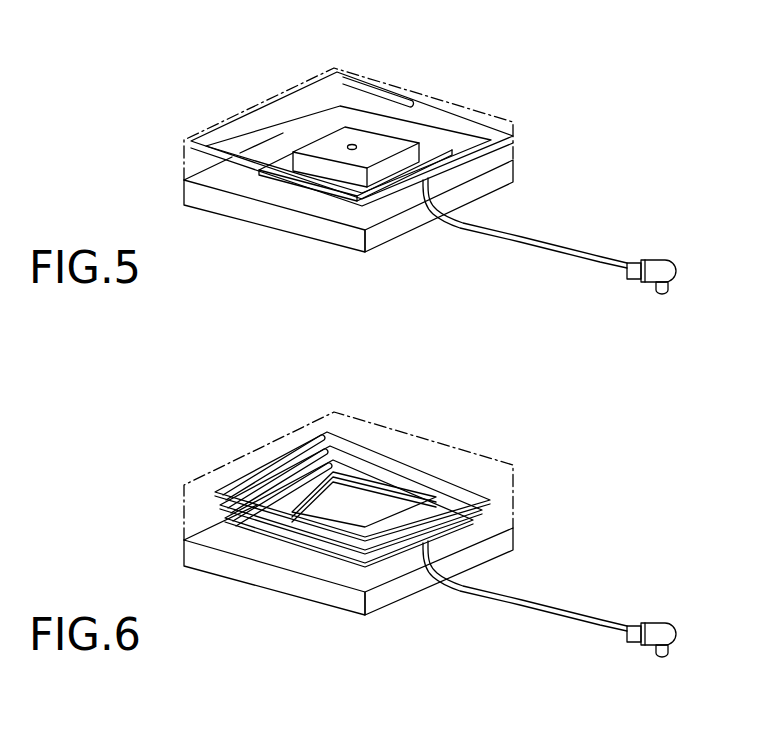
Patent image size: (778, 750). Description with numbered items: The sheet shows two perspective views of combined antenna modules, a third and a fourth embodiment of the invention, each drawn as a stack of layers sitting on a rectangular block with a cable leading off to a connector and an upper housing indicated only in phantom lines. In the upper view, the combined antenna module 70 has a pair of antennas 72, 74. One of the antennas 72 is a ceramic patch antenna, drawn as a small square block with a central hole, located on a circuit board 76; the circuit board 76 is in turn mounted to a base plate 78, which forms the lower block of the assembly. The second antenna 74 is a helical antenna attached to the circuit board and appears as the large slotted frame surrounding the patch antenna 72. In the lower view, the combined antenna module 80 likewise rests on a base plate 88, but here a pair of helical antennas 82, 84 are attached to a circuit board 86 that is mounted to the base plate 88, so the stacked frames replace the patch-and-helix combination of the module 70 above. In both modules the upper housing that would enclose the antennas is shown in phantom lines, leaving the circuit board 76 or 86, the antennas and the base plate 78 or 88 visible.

In FIG. 5, the combined antenna module 70 is at (243, 252).
In FIG. 5, the ceramic patch antenna 72 is at (410, 136).
In FIG. 5, the helical antenna 74 is at (405, 78).
In FIG. 5, the circuit board 76 is at (302, 186).
In FIG. 5, the base plate 78 is at (337, 233).
In FIG. 6, the combined antenna module 80 is at (242, 599).
In FIG. 6, the helical antenna 82 is at (333, 419).
In FIG. 6, the helical antenna 84 is at (348, 437).
In FIG. 6, the circuit board 86 is at (377, 518).
In FIG. 6, the base plate 88 is at (343, 602).